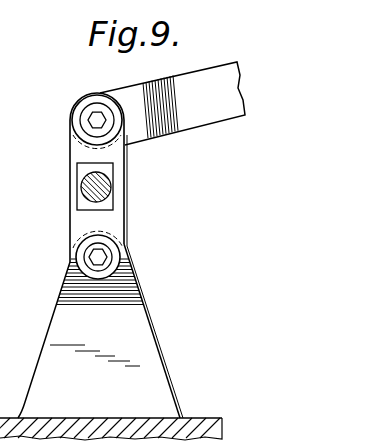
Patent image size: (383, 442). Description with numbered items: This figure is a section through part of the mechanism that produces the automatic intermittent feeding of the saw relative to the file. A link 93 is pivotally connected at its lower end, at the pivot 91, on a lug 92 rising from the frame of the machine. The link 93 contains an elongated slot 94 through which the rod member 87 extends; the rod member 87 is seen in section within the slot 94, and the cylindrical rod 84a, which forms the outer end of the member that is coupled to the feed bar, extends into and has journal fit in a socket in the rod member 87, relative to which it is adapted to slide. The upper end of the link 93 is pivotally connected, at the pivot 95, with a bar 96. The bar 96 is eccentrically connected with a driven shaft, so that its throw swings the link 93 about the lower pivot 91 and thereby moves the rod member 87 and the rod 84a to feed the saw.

The pivotal connection 91 is at (93, 260).
The lug 92 is at (153, 362).
The link 93 is at (80, 222).
The elongated slot 94 is at (80, 172).
The pivotal connection 95 is at (95, 118).
The bar 96 is at (230, 112).
The cylindrical rod 84a is at (112, 186).
The rod member 87 is at (112, 194).